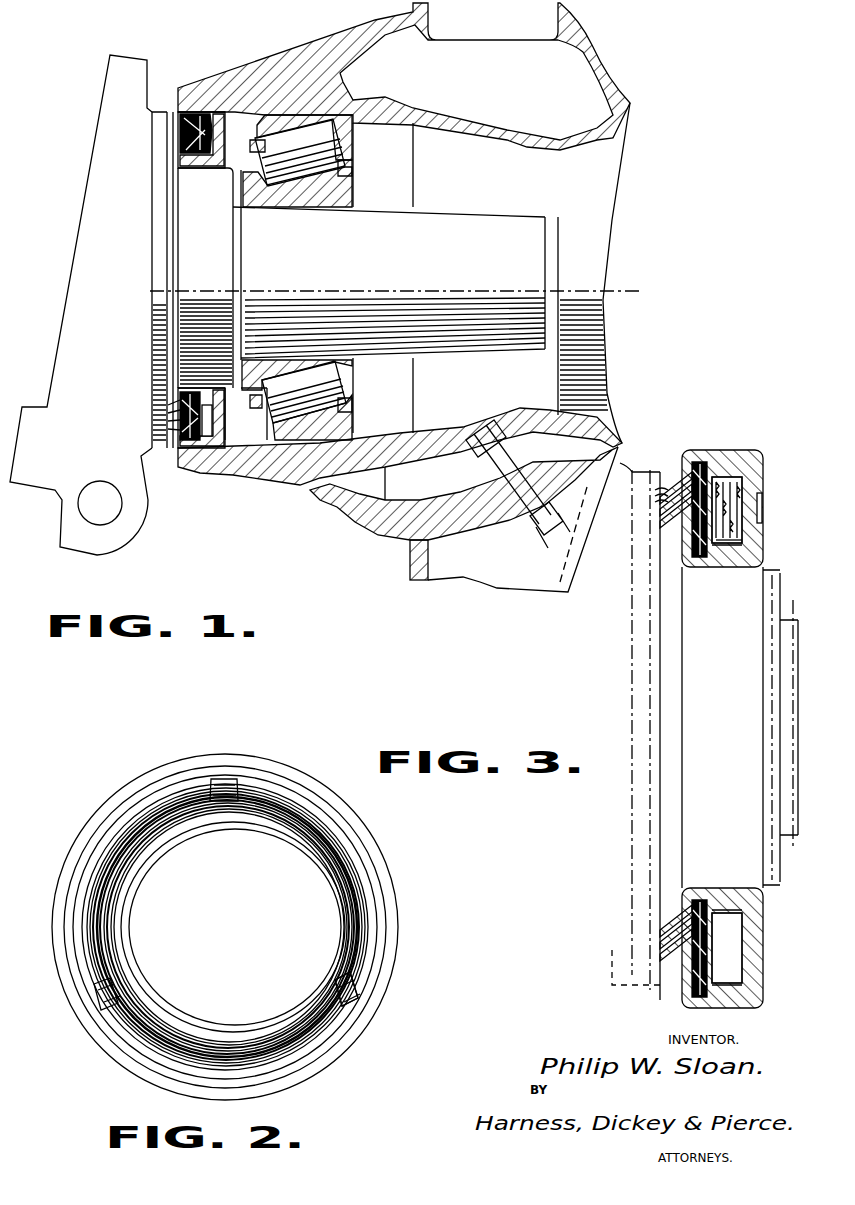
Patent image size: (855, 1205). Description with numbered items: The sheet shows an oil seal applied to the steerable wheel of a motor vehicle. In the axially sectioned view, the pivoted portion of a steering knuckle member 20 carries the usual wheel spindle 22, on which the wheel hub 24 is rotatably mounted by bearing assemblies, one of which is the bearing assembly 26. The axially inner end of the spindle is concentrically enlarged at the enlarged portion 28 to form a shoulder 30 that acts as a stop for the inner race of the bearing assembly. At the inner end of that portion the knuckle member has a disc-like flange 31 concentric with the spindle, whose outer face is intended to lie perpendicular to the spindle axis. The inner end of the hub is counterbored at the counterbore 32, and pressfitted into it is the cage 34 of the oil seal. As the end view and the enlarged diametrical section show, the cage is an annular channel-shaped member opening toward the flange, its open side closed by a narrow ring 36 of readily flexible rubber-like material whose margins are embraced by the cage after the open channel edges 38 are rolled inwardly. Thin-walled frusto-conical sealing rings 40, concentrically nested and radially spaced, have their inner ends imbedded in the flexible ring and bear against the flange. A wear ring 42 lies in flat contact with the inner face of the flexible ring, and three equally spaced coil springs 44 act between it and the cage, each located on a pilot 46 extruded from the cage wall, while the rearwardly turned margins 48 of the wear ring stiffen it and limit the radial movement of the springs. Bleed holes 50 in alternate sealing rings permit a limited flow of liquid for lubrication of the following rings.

In FIG. 1, the steering knuckle member 20 is at (88, 214).
In FIG. 1, the wheel spindle 22 is at (450, 271).
In FIG. 1, the wheel hub 24 is at (345, 52).
In FIG. 1, the bearing assembly 26 is at (312, 200).
In FIG. 1, the enlarged portion of the spindle 28 is at (218, 268).
In FIG. 1, the shoulder 30 is at (250, 200).
In FIG. 1, the flange 31 is at (165, 282).
In FIG. 3, the flange 31 is at (640, 632).
In FIG. 1, the counterbore 32 is at (200, 112).
In FIG. 1, the cage 34 is at (212, 170).
In FIG. 3, the cage 34 is at (750, 450).
In FIG. 2, the cage 34 is at (398, 912).
In FIG. 1, the ring of flexible material 36 is at (196, 450).
In FIG. 3, the ring of flexible material 36 is at (697, 462).
In FIG. 2, the ring of flexible material 36 is at (342, 820).
In FIG. 3, the open edges of the cage channel 38 is at (672, 1001).
In FIG. 1, the sealing rings 40 is at (152, 420).
In FIG. 3, the sealing rings 40 is at (666, 520).
In FIG. 2, the sealing rings 40 is at (348, 887).
In FIG. 3, the wear ring 42 is at (712, 478).
In FIG. 3, the coil springs 44 is at (735, 478).
In FIG. 2, the coil springs 44 is at (357, 993).
In FIG. 3, the pilot 46 is at (760, 512).
In FIG. 3, the turned margins of the wear ring 48 is at (715, 560).
In FIG. 3, the bleed holes 50 is at (665, 490).
In FIG. 2, the bleed holes 50 is at (123, 831).